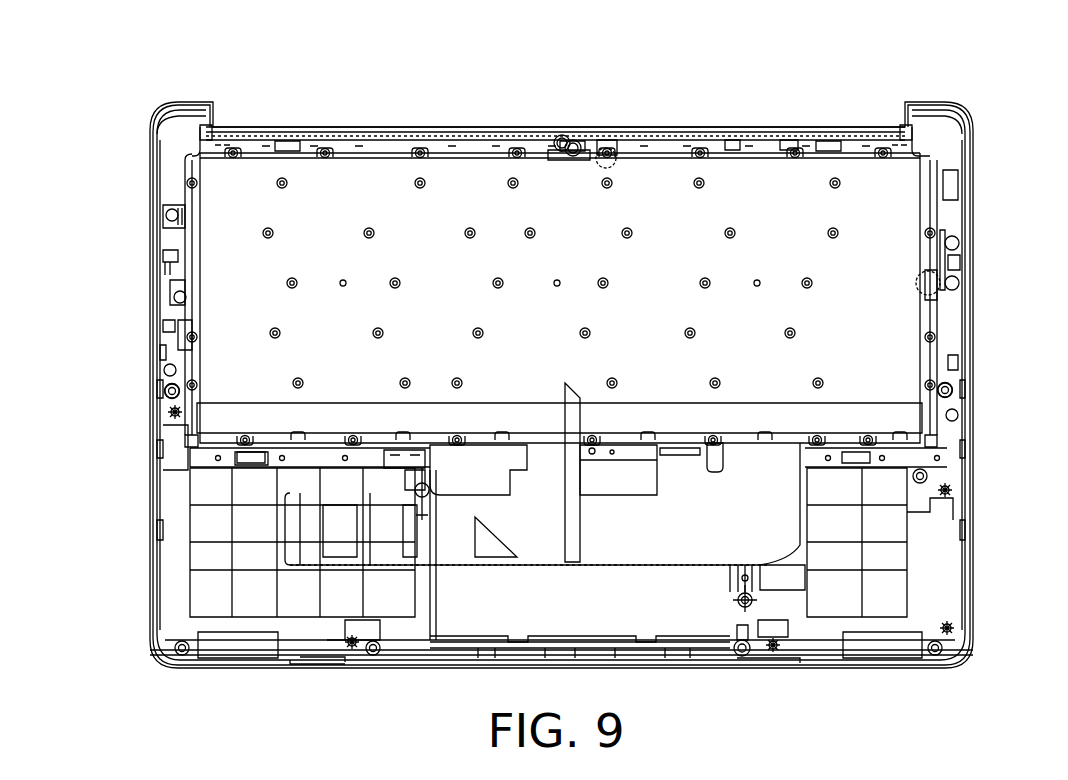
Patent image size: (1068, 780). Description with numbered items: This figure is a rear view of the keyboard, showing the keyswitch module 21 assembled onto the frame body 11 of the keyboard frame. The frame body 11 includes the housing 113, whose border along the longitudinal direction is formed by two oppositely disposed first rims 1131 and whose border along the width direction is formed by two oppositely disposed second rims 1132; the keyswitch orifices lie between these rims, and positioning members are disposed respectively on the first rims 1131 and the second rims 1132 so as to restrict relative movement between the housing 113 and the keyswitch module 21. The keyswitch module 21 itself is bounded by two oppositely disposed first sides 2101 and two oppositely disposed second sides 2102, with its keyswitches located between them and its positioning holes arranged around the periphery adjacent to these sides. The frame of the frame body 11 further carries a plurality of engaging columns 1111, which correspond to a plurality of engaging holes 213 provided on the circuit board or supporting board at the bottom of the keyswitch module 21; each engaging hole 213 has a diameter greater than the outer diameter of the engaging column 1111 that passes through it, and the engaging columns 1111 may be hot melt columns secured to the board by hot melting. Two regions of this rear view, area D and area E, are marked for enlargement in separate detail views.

The frame body 11 is at (783, 675).
The housing 113 is at (172, 145).
The engaging columns 1111 is at (833, 180).
The first rims 1131 is at (505, 118).
The second rims 1132 is at (160, 377).
The keyswitch module 21 is at (383, 165).
The first sides 2101 is at (585, 150).
The second sides 2102 is at (180, 337).
The engaging holes 213 is at (731, 228).
The area D is at (608, 148).
The area E is at (938, 290).